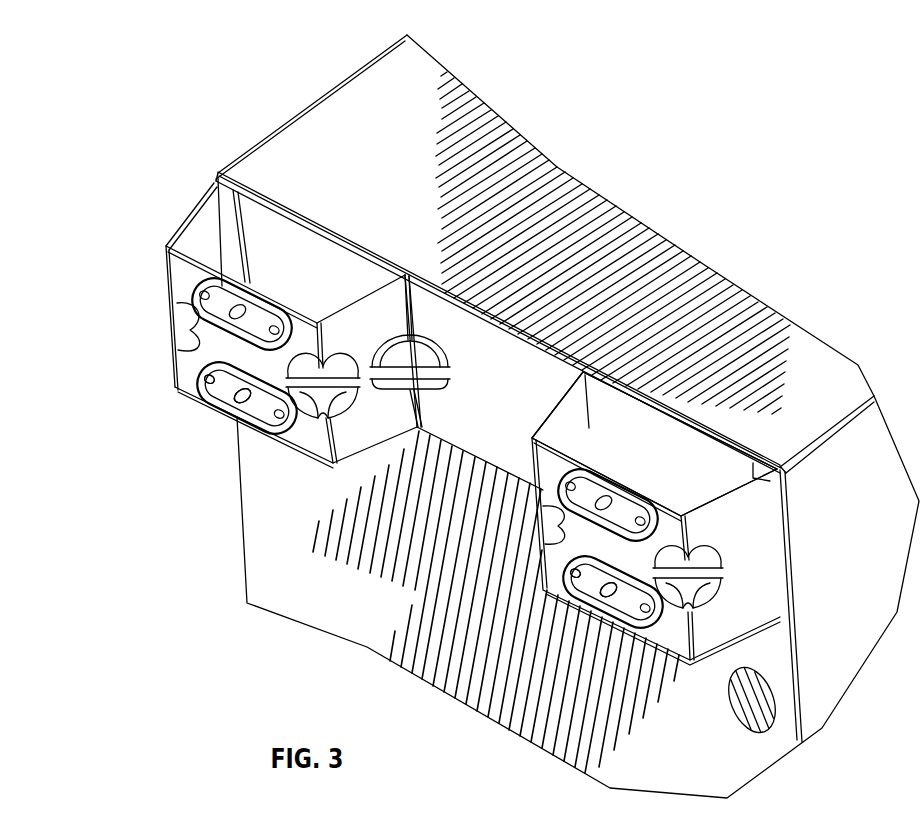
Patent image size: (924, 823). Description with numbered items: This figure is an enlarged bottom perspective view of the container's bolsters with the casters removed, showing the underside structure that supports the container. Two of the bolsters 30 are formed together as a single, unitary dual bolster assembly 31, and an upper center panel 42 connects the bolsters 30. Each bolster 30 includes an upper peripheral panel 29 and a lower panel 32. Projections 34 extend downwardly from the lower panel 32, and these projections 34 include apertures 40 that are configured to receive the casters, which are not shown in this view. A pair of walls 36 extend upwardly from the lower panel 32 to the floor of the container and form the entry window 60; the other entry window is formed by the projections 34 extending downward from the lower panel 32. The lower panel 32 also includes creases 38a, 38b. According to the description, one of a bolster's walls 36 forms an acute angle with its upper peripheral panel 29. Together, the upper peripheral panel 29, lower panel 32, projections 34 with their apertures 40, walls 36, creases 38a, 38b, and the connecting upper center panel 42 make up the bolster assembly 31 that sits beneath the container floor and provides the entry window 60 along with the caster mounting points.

The upper peripheral panel 29 is at (760, 472).
The bolster 30 is at (758, 527).
The dual bolster assembly 31 is at (534, 290).
The lower panel 32 is at (180, 288).
The projections 34 is at (255, 313).
The walls 36 is at (557, 437).
The crease 38a is at (402, 358).
The crease 38b is at (320, 432).
The apertures 40 is at (240, 408).
The upper center panel 42 is at (432, 320).
The entry window 60 is at (623, 447).